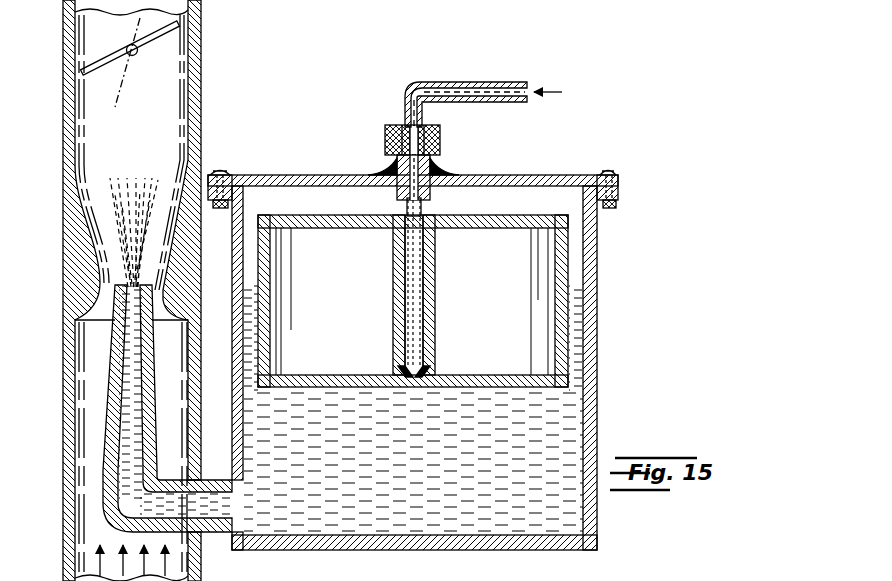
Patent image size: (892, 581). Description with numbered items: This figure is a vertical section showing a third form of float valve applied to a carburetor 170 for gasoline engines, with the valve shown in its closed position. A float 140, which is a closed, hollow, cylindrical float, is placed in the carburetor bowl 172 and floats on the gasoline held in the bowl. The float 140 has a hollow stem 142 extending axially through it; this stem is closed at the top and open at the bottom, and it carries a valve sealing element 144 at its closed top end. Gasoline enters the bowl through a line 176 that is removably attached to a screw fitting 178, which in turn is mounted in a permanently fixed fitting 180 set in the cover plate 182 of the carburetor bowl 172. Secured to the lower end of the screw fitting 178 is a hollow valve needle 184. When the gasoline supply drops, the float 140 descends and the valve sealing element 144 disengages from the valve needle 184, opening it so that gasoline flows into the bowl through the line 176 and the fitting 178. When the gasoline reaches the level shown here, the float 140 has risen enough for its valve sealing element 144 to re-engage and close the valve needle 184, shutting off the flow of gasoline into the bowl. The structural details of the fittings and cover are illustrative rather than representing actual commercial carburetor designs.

The carburetor 170 is at (228, 114).
The carburetor bowl 172 is at (599, 274).
The cover plate 182 is at (548, 175).
The float 140 is at (553, 216).
The hollow stem 142 is at (435, 304).
The valve sealing element 144 is at (434, 366).
The hollow valve needle 184 is at (421, 203).
The screw fitting 178 is at (438, 163).
The permanently fixed fitting 180 is at (387, 163).
The gas line 176 is at (501, 82).